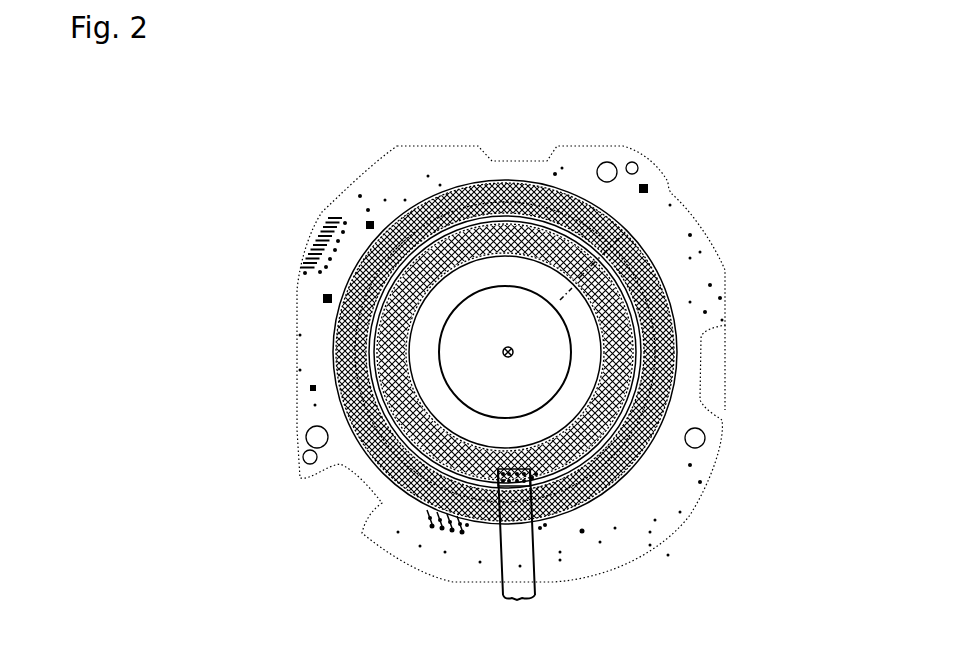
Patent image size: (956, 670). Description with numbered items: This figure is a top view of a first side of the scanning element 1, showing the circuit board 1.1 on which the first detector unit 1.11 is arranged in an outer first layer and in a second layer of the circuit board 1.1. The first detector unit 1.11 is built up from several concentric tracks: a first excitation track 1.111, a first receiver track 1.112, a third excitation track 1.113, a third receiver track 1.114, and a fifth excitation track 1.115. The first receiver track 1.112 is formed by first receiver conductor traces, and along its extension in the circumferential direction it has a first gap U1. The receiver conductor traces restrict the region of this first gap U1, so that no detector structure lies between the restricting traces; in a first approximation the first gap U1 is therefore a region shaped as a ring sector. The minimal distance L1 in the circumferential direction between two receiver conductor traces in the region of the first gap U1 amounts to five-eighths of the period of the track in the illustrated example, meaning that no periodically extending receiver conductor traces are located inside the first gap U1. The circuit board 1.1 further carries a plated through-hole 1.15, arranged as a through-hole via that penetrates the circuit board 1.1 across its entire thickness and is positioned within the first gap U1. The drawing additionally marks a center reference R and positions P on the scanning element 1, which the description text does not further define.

The scanning element 1 is at (294, 210).
The circuit board 1.1 is at (390, 176).
The first detector unit 1.11 is at (332, 313).
The first excitation track 1.111 is at (443, 432).
The first receiver track 1.112 is at (636, 323).
The third excitation track 1.113 is at (384, 408).
The third receiver track 1.114 is at (660, 377).
The fifth excitation track 1.115 is at (337, 353).
The plated through-hole 1.15 is at (528, 482).
The minimal distance L1 is at (505, 466).
The first gap U1 is at (519, 549).
The axis of rotation R is at (501, 351).
The measuring point P is at (673, 258).